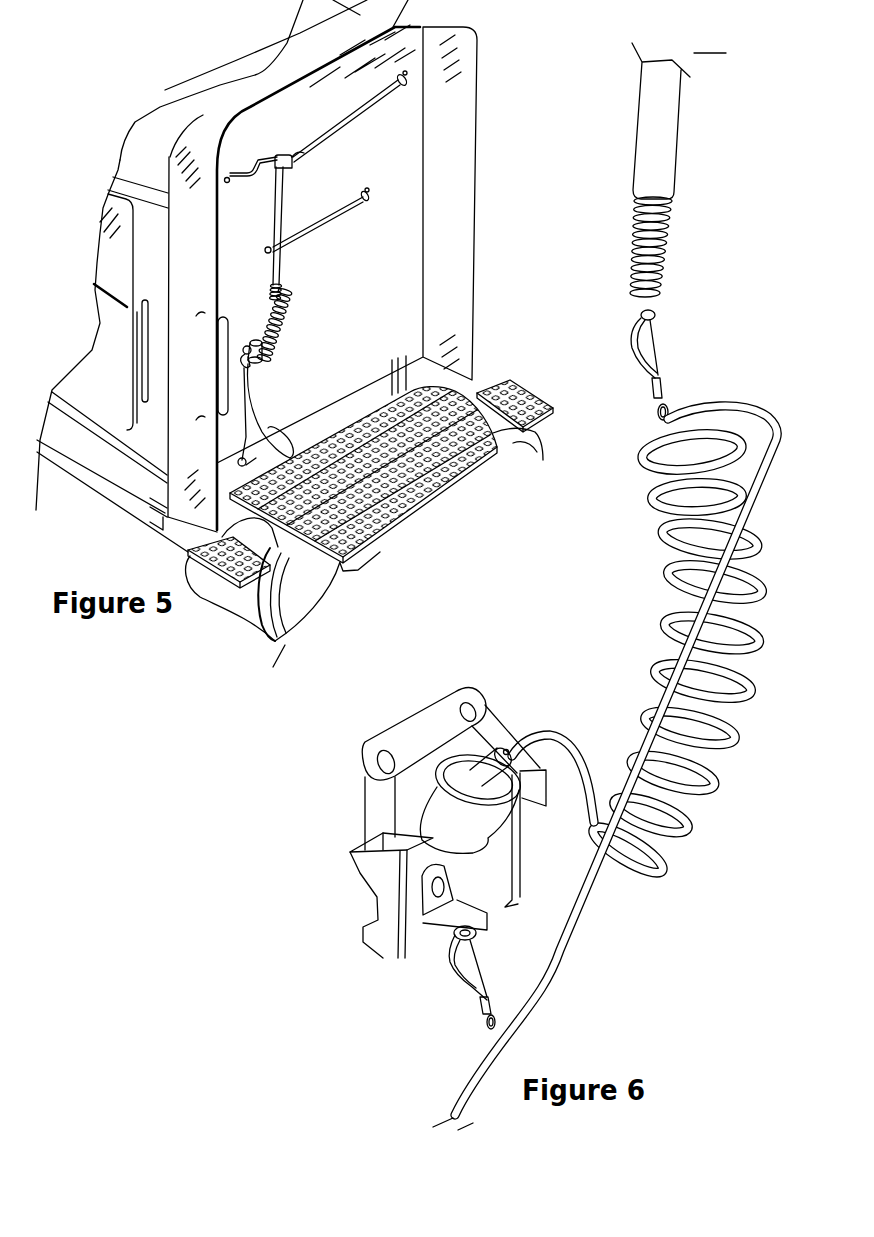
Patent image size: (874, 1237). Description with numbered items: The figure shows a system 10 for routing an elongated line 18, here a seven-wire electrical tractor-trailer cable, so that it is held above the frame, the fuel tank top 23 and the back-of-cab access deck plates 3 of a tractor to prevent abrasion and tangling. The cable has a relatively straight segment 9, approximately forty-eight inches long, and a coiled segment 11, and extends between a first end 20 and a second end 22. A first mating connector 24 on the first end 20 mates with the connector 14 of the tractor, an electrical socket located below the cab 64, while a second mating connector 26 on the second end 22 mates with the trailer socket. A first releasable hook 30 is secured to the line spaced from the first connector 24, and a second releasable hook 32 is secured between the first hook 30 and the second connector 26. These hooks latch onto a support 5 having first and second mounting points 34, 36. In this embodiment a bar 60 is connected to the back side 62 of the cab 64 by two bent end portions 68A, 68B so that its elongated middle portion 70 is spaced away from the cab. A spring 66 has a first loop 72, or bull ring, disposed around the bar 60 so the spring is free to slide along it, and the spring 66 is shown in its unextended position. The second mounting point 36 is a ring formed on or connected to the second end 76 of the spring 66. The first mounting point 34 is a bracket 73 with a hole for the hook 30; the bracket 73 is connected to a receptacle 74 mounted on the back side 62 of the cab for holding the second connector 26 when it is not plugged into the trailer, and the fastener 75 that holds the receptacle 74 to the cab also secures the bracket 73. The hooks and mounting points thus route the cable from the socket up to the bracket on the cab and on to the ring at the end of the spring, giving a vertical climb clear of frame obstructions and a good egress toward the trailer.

In FIG. 5, the deck 3 is at (458, 455).
In FIG. 5, the support 5 is at (243, 273).
In FIG. 5, the relatively straight segment 9 is at (263, 397).
In FIG. 6, the relatively straight segment 9 is at (594, 900).
In FIG. 5, the system 10 is at (324, 184).
In FIG. 6, the system 10 is at (655, 226).
In FIG. 5, the coiled segment 11 is at (262, 373).
In FIG. 6, the coiled segment 11 is at (617, 768).
In FIG. 5, the connector 14 is at (240, 460).
In FIG. 5, the elongated line 18 is at (287, 323).
In FIG. 6, the elongated line 18 is at (767, 648).
In FIG. 5, the first end 20 is at (278, 437).
In FIG. 5, the second end 22 is at (260, 360).
In FIG. 6, the second end 22 is at (513, 745).
In FIG. 5, the fuel tank top 23 is at (253, 598).
In FIG. 5, the first mating connector 24 is at (167, 517).
In FIG. 6, the second mating connector 26 is at (440, 745).
In FIG. 6, the first releasable hook 30 is at (467, 972).
In FIG. 6, the second releasable hook 32 is at (640, 350).
In FIG. 5, the first mounting point 34 is at (247, 370).
In FIG. 6, the first mounting point 34 is at (480, 928).
In FIG. 6, the second mounting point 36 is at (654, 306).
In FIG. 5, the bar 60 is at (347, 117).
In FIG. 5, the back side 62 is at (398, 134).
In FIG. 5, the cab 64 is at (258, 70).
In FIG. 5, the spring 66 is at (278, 210).
In FIG. 6, the spring 66 is at (664, 135).
In FIG. 5, the bent end portion 68A is at (230, 165).
In FIG. 5, the bent end portion 68B is at (410, 98).
In FIG. 5, the elongated middle portion 70 is at (308, 143).
In FIG. 5, the first loop 72 is at (277, 155).
In FIG. 5, the bracket 73 is at (228, 350).
In FIG. 6, the bracket 73 is at (430, 943).
In FIG. 6, the receptacle 74 is at (423, 797).
In FIG. 6, the fastener 75 is at (437, 888).
In FIG. 5, the second end 76 is at (277, 275).
In FIG. 6, the second end 76 is at (640, 259).